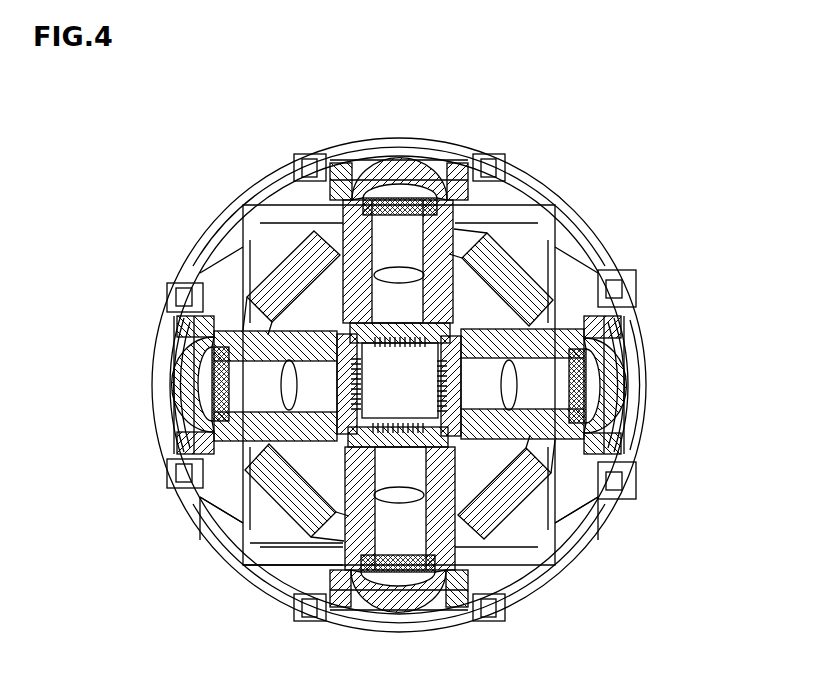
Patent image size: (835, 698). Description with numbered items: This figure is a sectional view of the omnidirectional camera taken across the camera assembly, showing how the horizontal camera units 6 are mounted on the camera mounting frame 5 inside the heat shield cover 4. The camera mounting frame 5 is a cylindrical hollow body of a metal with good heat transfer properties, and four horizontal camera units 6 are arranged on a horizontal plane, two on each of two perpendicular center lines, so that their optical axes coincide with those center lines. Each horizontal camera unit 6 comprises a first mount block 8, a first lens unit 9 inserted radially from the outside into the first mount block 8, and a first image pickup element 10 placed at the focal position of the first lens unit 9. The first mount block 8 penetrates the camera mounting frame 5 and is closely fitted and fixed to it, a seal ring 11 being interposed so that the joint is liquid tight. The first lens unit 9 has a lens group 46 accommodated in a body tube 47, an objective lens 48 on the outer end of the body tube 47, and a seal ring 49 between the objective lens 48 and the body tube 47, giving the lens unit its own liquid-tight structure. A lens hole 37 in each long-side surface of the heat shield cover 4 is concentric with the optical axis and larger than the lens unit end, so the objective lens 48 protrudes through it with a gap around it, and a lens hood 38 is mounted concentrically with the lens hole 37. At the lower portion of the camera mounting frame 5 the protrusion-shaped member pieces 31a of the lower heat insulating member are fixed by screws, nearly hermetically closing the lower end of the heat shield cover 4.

The heat shield cover 4 is at (540, 195).
The camera mounting frame 5 is at (262, 285).
The horizontal camera unit 6 is at (290, 235).
The first mount block 8 is at (530, 215).
The first lens unit 9 is at (600, 535).
The first image pickup element 10 is at (240, 560).
The seal ring 11 is at (555, 540).
The member piece 31a is at (290, 565).
The lens hole 37 is at (625, 285).
The lens hood 38 is at (310, 152).
The lens group 46 is at (437, 590).
The body tube 47 is at (483, 600).
The objective lens 48 is at (405, 140).
The seal ring 49 is at (630, 430).